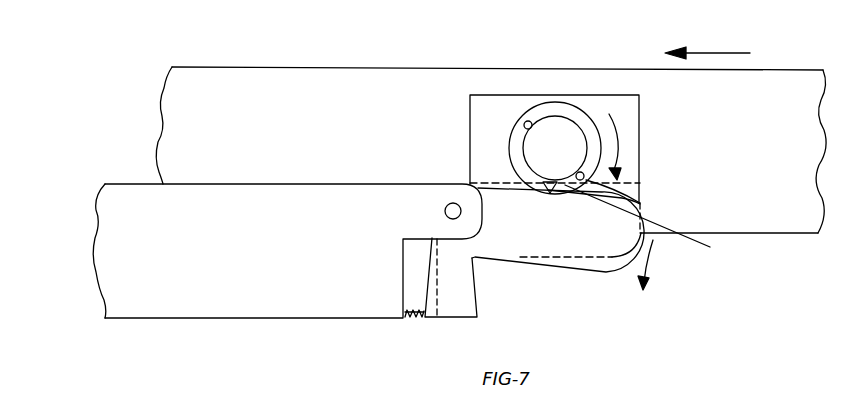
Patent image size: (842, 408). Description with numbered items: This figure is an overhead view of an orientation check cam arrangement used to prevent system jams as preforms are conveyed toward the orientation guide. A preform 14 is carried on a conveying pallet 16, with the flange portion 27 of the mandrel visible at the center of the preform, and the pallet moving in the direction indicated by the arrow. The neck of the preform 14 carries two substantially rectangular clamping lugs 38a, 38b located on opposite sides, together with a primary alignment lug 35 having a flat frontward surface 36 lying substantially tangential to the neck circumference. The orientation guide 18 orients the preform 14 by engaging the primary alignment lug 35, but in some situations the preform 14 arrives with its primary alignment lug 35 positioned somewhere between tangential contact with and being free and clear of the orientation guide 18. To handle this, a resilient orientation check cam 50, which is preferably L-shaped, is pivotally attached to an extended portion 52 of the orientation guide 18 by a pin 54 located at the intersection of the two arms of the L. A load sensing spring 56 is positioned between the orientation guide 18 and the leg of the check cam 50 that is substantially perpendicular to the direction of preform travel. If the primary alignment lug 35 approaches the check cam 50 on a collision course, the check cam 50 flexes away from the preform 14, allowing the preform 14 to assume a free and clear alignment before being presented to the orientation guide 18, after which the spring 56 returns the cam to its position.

The preform 14 is at (523, 149).
The conveying pallet 16 is at (639, 130).
The orientation guide 18 is at (234, 297).
The flange portion 27 is at (588, 113).
The primary alignment lug 35 is at (646, 224).
The flat frontward surface 36 is at (551, 192).
The clamping lug 38a is at (530, 120).
The clamping lug 38b is at (622, 187).
The orientation check cam 50 is at (613, 273).
The extended portion 52 is at (418, 240).
The pin 54 is at (445, 210).
The load sensing spring 56 is at (412, 315).